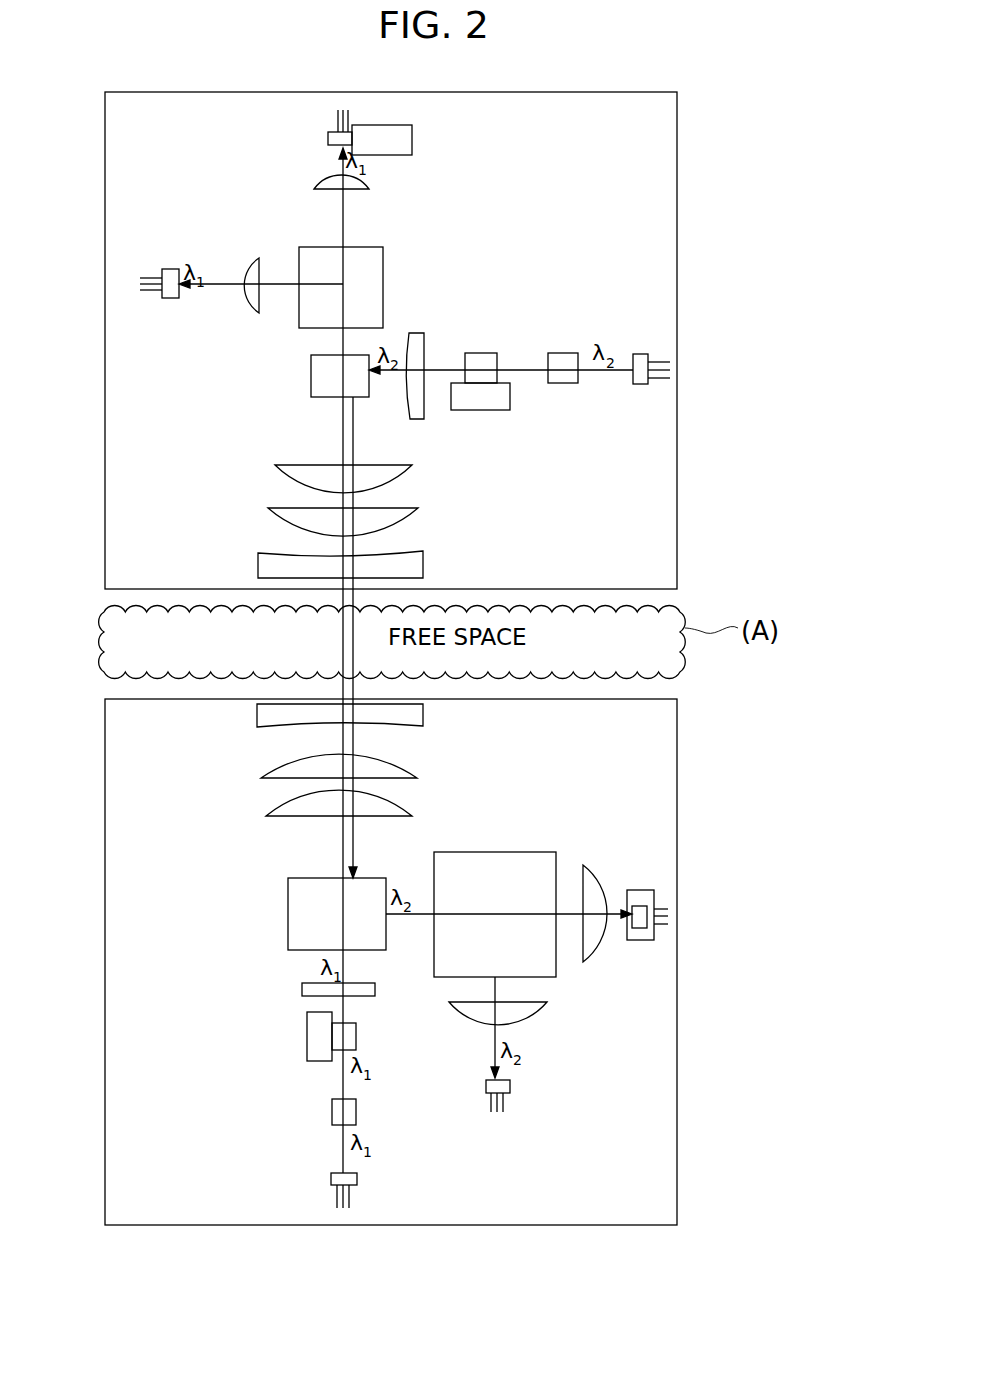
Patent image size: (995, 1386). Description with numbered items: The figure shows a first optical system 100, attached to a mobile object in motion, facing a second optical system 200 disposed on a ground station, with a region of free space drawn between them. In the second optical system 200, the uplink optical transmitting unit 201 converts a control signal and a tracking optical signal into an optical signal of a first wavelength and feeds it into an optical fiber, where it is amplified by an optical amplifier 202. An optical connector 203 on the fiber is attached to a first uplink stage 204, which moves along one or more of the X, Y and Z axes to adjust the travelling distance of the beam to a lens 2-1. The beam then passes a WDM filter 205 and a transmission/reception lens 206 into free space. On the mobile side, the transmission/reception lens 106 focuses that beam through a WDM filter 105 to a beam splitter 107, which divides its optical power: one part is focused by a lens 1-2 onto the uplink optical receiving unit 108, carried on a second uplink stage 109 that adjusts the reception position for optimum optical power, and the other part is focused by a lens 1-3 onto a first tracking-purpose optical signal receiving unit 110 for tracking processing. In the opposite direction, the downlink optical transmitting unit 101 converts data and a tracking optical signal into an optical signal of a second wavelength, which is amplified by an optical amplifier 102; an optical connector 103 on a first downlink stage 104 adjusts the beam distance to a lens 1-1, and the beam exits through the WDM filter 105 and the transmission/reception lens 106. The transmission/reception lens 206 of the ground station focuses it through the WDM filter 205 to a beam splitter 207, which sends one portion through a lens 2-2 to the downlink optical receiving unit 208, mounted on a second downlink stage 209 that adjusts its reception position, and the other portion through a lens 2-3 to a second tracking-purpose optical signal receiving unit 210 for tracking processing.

The first optical system 100 is at (497, 245).
The downlink optical transmitting unit 101 is at (641, 365).
The optical amplifier 102 is at (572, 377).
The optical connector 103 is at (483, 371).
The first downlink stage 104 is at (492, 402).
The WDM filter 105 is at (317, 378).
The transmission/reception lens 106 is at (435, 465).
The beam splitter 107 is at (318, 246).
The uplink optical receiving unit 108 is at (328, 139).
The second uplink stage 109 is at (389, 138).
The first tracking-purpose optical signal receiving unit 110 is at (173, 283).
The lens 1-1 is at (414, 333).
The lens 1-2 is at (362, 183).
The lens 1-3 is at (252, 302).
The second optical system 200 is at (562, 784).
The uplink optical transmitting unit 201 is at (352, 1180).
The optical amplifier 202 is at (350, 1112).
The optical connector 203 is at (350, 1040).
The first uplink stage 204 is at (315, 1047).
The WDM filter 205 is at (288, 897).
The transmission/reception lens 206 is at (434, 704).
The beam splitter 207 is at (495, 872).
The downlink optical receiving unit 208 is at (641, 912).
The second downlink stage 209 is at (640, 932).
The second tracking-purpose optical signal receiving unit 210 is at (512, 1087).
The lens 2-1 is at (302, 989).
The lens 2-2 is at (600, 875).
The lens 2-3 is at (540, 1013).